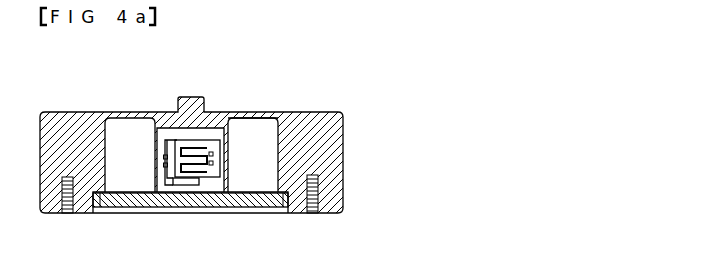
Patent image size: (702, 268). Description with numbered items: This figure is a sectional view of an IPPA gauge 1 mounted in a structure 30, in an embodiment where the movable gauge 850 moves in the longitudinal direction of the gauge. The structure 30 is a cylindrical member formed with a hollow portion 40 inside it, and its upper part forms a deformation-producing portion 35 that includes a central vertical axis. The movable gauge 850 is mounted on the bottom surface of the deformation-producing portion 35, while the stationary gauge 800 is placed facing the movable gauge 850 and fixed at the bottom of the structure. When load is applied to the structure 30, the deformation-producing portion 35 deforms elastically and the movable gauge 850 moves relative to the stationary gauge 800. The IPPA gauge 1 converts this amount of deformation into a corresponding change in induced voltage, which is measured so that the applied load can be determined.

The IPPA gauge 1 is at (212, 184).
The structure 30 is at (348, 116).
The deformation-producing portion 35 is at (240, 112).
The hollow portion 40 is at (140, 158).
The stationary gauge 800 is at (178, 186).
The movable gauge 850 is at (193, 143).